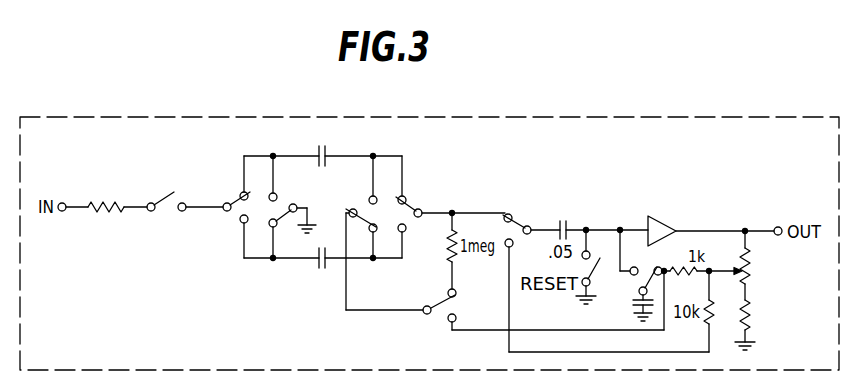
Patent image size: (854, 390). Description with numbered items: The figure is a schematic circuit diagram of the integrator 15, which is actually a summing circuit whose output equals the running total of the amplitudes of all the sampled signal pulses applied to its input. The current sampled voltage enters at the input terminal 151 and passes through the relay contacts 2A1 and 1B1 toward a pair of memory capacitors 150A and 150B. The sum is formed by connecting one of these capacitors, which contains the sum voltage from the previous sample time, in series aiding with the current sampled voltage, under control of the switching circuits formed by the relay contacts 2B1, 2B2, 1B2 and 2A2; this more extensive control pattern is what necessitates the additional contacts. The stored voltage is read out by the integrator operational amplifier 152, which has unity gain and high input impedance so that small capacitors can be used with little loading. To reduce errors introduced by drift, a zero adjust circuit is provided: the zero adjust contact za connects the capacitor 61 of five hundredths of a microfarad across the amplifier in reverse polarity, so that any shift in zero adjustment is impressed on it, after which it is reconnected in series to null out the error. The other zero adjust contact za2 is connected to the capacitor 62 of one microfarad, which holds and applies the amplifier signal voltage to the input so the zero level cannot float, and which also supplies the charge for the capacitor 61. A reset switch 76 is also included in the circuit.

The integrator 15 is at (532, 117).
The input terminal 151 is at (60, 200).
The relay contact 2A1 is at (152, 212).
The relay contact 1B1 is at (221, 211).
The relay contact 2B1 is at (290, 204).
The capacitor 150A is at (322, 150).
The capacitor 150B is at (322, 264).
The relay contact 2B2 is at (362, 198).
The relay contact 1B2 is at (407, 208).
The relay contact 2A2 is at (441, 325).
The zero adjust relay contact za is at (519, 228).
The capacitor 61 is at (566, 224).
The reset switch 76 is at (591, 275).
The integrator operational amplifier 152 is at (656, 222).
The zero adjust relay contact za2 is at (657, 271).
The capacitor 62 is at (634, 307).